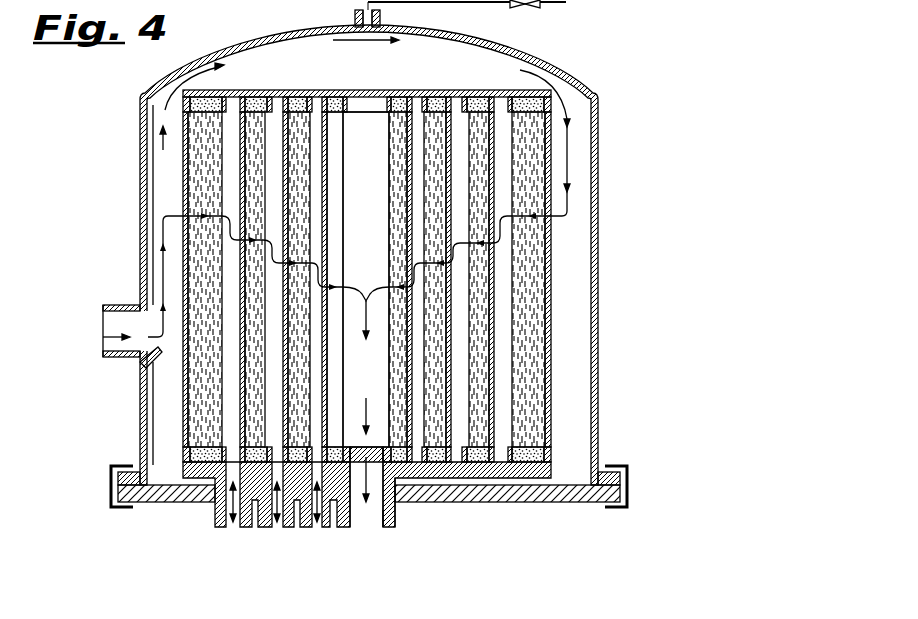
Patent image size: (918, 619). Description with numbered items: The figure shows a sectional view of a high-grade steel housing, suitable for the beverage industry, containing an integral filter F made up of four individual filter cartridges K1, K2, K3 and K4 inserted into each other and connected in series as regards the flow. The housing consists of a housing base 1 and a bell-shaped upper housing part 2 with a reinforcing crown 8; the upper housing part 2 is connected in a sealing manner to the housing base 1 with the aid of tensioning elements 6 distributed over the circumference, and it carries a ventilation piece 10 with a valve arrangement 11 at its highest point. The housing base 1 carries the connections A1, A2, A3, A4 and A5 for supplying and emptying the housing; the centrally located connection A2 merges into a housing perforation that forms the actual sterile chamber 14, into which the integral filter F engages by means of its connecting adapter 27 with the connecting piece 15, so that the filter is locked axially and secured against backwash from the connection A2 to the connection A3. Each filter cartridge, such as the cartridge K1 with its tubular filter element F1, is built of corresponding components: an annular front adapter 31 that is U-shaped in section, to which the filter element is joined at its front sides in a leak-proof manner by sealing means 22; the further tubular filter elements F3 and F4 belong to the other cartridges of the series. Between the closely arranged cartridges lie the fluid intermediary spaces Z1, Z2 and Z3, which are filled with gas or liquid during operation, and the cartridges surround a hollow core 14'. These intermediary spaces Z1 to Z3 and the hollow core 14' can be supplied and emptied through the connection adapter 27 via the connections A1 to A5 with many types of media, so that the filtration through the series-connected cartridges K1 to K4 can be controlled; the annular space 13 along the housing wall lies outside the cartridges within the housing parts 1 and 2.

The housing base 1 is at (171, 502).
The bell-shaped upper housing part 2 is at (598, 262).
The tensioning elements 6 is at (112, 488).
The reinforcing crown 8 is at (130, 470).
The ventilation piece 10 is at (355, 13).
The valve arrangement 11 is at (533, 8).
The annular space 13 is at (146, 203).
The sterile chamber 14 is at (366, 506).
The hollow core 14' is at (366, 279).
The connecting piece 15 is at (396, 507).
The sealing means 22 is at (331, 97).
The connecting adapter 27 is at (478, 487).
The front adapter 31 is at (359, 90).
The connection A1 is at (115, 308).
The centrally located connection A2 is at (389, 523).
The connection A3 is at (217, 523).
The connection A4 is at (262, 523).
The connection A5 is at (298, 523).
The integral filter F is at (245, 85).
The tubular filter element F1 is at (531, 267).
The tubular filter element F3 is at (441, 243).
The tubular filter element F4 is at (393, 205).
The filter cartridge K1 is at (558, 322).
The filter cartridge K2 is at (504, 358).
The filter cartridge K3 is at (458, 398).
The filter cartridge K4 is at (413, 133).
The intermediary space Z1 is at (234, 158).
The intermediary space Z2 is at (302, 156).
The intermediary space Z3 is at (315, 184).